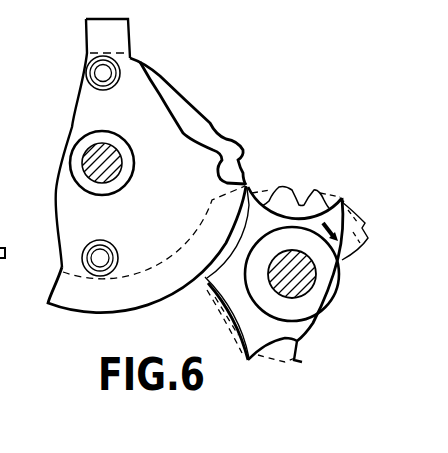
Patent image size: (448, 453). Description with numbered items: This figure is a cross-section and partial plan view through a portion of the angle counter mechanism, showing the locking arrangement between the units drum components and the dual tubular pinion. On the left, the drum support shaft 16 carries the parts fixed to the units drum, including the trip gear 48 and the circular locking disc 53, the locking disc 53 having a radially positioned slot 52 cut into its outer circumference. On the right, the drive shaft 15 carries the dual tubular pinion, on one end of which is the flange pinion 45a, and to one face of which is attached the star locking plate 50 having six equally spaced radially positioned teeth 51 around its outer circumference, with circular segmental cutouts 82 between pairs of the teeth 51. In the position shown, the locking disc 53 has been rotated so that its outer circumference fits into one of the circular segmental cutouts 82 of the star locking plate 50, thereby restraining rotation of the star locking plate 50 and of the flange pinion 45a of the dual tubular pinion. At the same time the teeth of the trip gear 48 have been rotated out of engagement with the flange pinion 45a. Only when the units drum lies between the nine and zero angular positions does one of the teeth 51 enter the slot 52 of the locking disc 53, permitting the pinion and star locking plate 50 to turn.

The trip gear 48 is at (155, 80).
The radially positioned slot 52 is at (215, 152).
The locking disc 53 is at (130, 292).
The drum support shaft 16 is at (112, 173).
The circular segmental cutouts 82 is at (219, 249).
The star locking plate 50 is at (345, 240).
The drive shaft 15 is at (300, 282).
The flange pinion 45a is at (311, 195).
The radially positioned teeth 51 is at (343, 199).